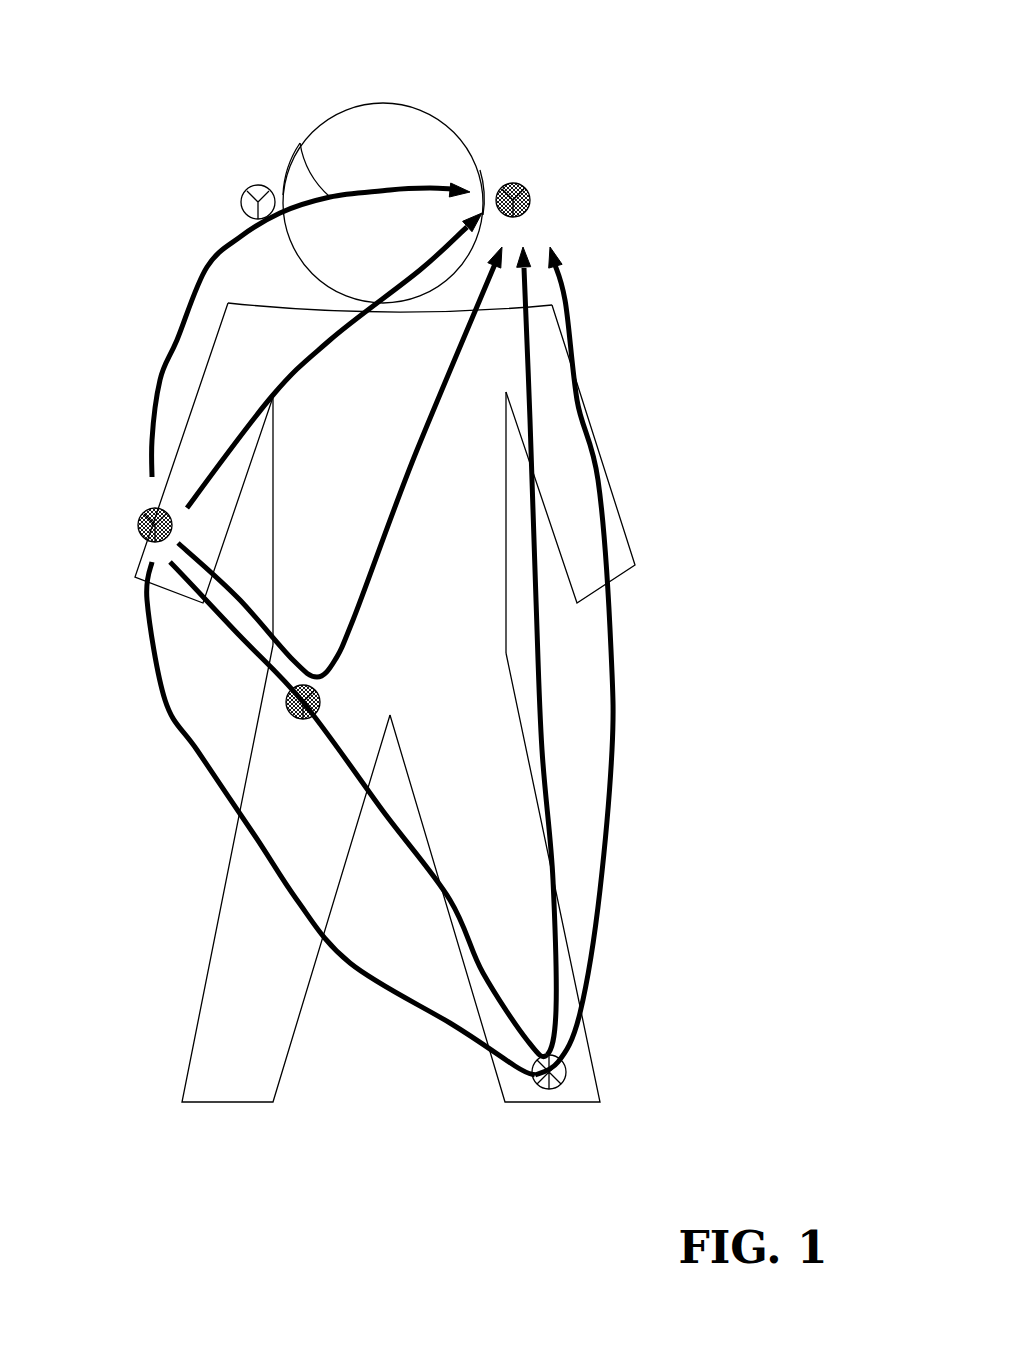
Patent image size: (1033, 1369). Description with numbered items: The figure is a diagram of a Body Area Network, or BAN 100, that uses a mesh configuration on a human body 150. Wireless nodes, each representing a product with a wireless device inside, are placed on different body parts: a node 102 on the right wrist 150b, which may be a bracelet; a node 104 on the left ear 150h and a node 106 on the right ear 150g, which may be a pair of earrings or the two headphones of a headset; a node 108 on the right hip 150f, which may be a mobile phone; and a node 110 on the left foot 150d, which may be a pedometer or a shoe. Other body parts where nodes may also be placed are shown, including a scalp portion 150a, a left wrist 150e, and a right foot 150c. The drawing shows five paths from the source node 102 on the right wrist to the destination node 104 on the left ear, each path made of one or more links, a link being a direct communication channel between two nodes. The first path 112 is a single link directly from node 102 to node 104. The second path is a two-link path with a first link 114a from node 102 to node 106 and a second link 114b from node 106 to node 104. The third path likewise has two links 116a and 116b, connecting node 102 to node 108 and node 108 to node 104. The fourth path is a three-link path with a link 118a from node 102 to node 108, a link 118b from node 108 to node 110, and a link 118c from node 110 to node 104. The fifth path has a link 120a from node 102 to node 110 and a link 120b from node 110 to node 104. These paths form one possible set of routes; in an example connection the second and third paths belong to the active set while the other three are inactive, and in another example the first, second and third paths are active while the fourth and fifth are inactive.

The Body Area Network (BAN) 100 is at (392, 568).
The body 150 is at (383, 572).
The scalp portion 150a is at (387, 103).
The right wrist 150b is at (138, 562).
The right foot 150c is at (190, 1050).
The left foot 150d is at (593, 1077).
The left wrist 150e is at (628, 543).
The right hip 150f is at (272, 695).
The right ear 150g is at (285, 180).
The left ear 150h is at (483, 177).
The node 102 is at (145, 510).
The node 104 is at (532, 200).
The node 106 is at (242, 205).
The node 108 is at (283, 713).
The node 110 is at (555, 1090).
The path P1 112 is at (293, 368).
The first link 114a is at (190, 297).
The second link 114b is at (300, 143).
The link 116a is at (232, 585).
The link 116b is at (418, 455).
The link 118a is at (227, 638).
The link 118b is at (390, 835).
The link 118c is at (543, 748).
The link 120a is at (357, 967).
The link 120b is at (613, 748).